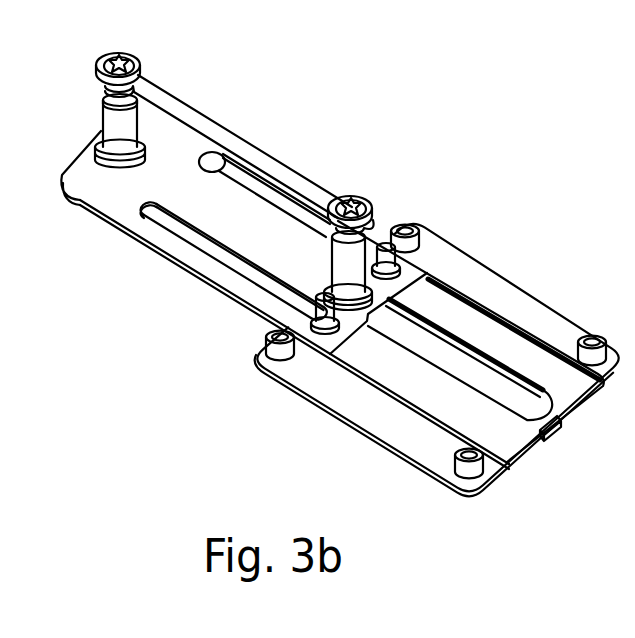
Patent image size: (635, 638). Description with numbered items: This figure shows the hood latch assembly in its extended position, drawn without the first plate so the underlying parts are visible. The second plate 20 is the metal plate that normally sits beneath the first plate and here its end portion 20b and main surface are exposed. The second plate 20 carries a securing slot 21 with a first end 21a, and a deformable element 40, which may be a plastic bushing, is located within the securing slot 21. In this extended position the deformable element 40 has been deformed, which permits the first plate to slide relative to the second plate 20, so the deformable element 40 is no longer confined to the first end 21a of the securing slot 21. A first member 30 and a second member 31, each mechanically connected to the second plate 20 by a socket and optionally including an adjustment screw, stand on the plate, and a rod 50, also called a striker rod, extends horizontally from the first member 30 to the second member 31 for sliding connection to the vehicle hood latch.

The second plate 20 is at (318, 300).
The end portion of carrier plate 20b is at (98, 179).
The securing slot 21 is at (194, 264).
The first end of the securing slot 21a is at (109, 251).
The first member 30 is at (350, 273).
The second member 31 is at (88, 133).
The deformable element 40 is at (258, 353).
The rod 50 is at (234, 122).